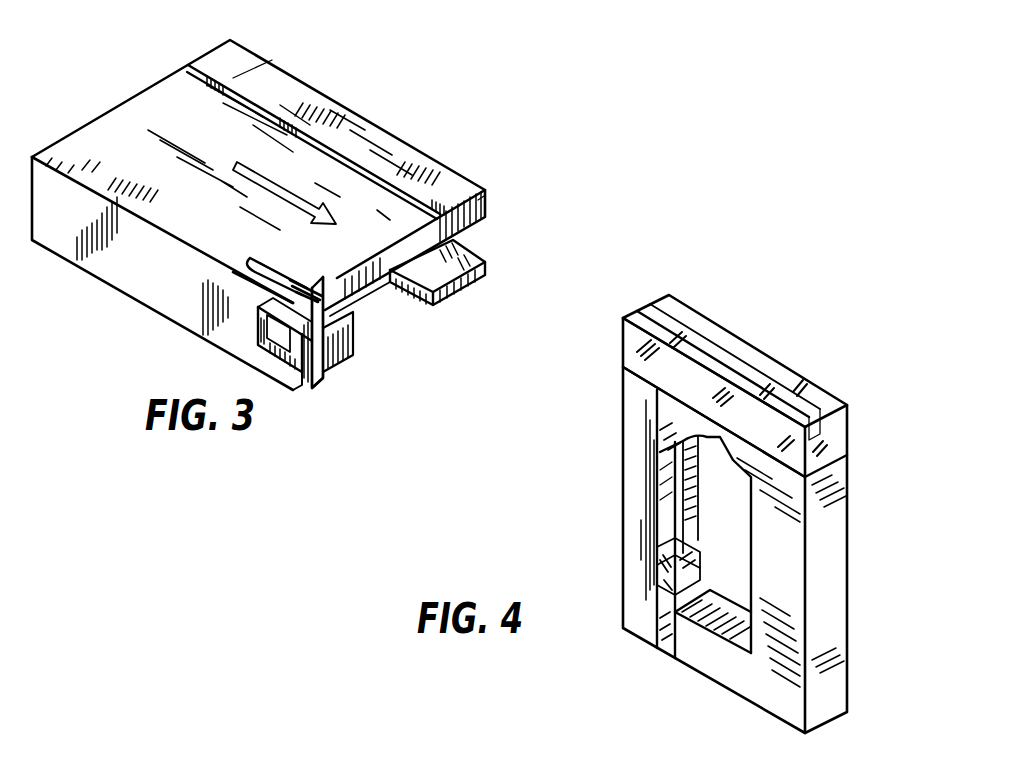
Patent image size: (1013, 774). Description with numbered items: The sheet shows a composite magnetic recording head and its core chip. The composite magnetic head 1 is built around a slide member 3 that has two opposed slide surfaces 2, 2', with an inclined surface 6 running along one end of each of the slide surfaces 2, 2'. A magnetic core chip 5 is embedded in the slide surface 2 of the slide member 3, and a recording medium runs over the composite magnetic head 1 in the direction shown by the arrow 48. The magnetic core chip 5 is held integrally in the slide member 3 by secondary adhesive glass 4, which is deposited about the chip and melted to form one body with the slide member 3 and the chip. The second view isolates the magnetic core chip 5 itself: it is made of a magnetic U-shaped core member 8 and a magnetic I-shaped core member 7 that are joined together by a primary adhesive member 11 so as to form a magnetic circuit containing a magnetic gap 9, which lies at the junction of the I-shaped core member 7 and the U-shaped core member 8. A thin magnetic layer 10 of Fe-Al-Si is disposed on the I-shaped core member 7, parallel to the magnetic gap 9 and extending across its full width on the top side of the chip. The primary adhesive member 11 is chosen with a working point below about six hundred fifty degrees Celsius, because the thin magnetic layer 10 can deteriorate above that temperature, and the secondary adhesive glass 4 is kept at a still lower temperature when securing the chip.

In FIG. 3, the composite magnetic head 1 is at (150, 74).
In FIG. 3, the slide surface 2 is at (258, 215).
In FIG. 3, the slide surface 2' is at (315, 139).
In FIG. 3, the slide member 3 is at (478, 213).
In FIG. 3, the secondary adhesive glass 4 is at (233, 266).
In FIG. 4, the secondary adhesive glass 4 is at (637, 352).
In FIG. 3, the magnetic core chip 5 is at (320, 321).
In FIG. 4, the magnetic core chip 5 is at (849, 493).
In FIG. 3, the inclined surface 6 is at (480, 194).
In FIG. 3, the I-shaped core member 7 is at (318, 362).
In FIG. 4, the I-shaped core member 7 is at (636, 575).
In FIG. 3, the U-shaped core member 8 is at (278, 358).
In FIG. 4, the U-shaped core member 8 is at (722, 670).
In FIG. 4, the magnetic gap 9 is at (697, 338).
In FIG. 4, the thin magnetic layer 10 is at (700, 333).
In FIG. 4, the primary adhesive member 11 is at (673, 428).
In FIG. 3, the arrow 48 is at (266, 183).